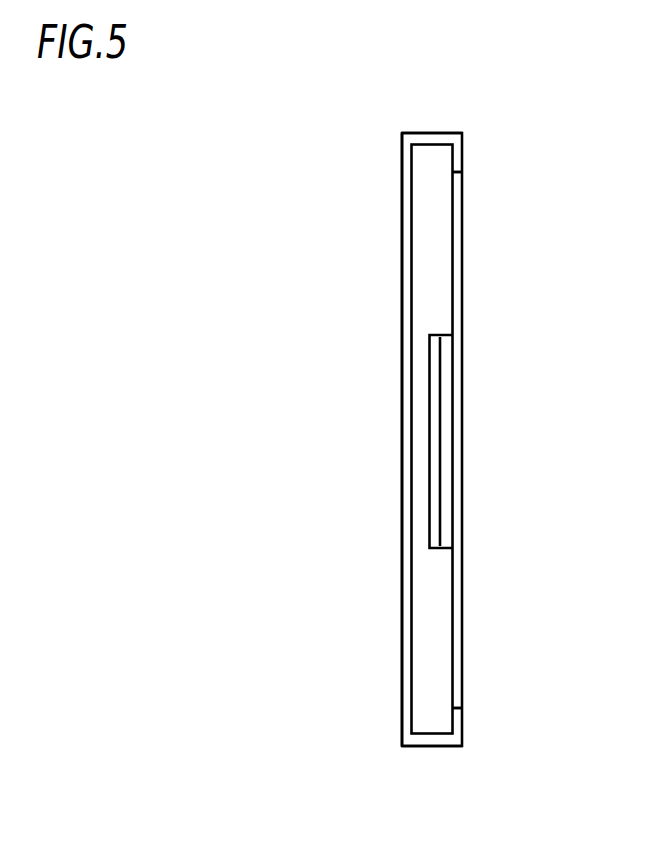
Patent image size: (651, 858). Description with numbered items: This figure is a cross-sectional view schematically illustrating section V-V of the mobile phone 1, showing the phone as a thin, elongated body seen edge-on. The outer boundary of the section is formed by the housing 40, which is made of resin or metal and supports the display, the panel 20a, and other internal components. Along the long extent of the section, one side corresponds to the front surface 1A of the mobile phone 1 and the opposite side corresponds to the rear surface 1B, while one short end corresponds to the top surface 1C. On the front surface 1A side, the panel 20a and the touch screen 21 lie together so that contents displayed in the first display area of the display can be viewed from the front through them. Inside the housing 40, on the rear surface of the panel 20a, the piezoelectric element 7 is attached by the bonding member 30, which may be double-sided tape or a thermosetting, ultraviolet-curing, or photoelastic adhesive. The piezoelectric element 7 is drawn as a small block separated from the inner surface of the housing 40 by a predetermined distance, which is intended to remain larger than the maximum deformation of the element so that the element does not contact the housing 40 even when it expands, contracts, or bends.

The mobile phone 1 is at (486, 154).
The front surface 1A is at (462, 720).
The rear surface 1B is at (401, 573).
The top surface 1C is at (412, 133).
The piezoelectric element 7 is at (437, 442).
The panel 20a is at (462, 208).
The touch screen 21 is at (462, 208).
The bonding member 30 is at (446, 423).
The housing 40 is at (409, 223).